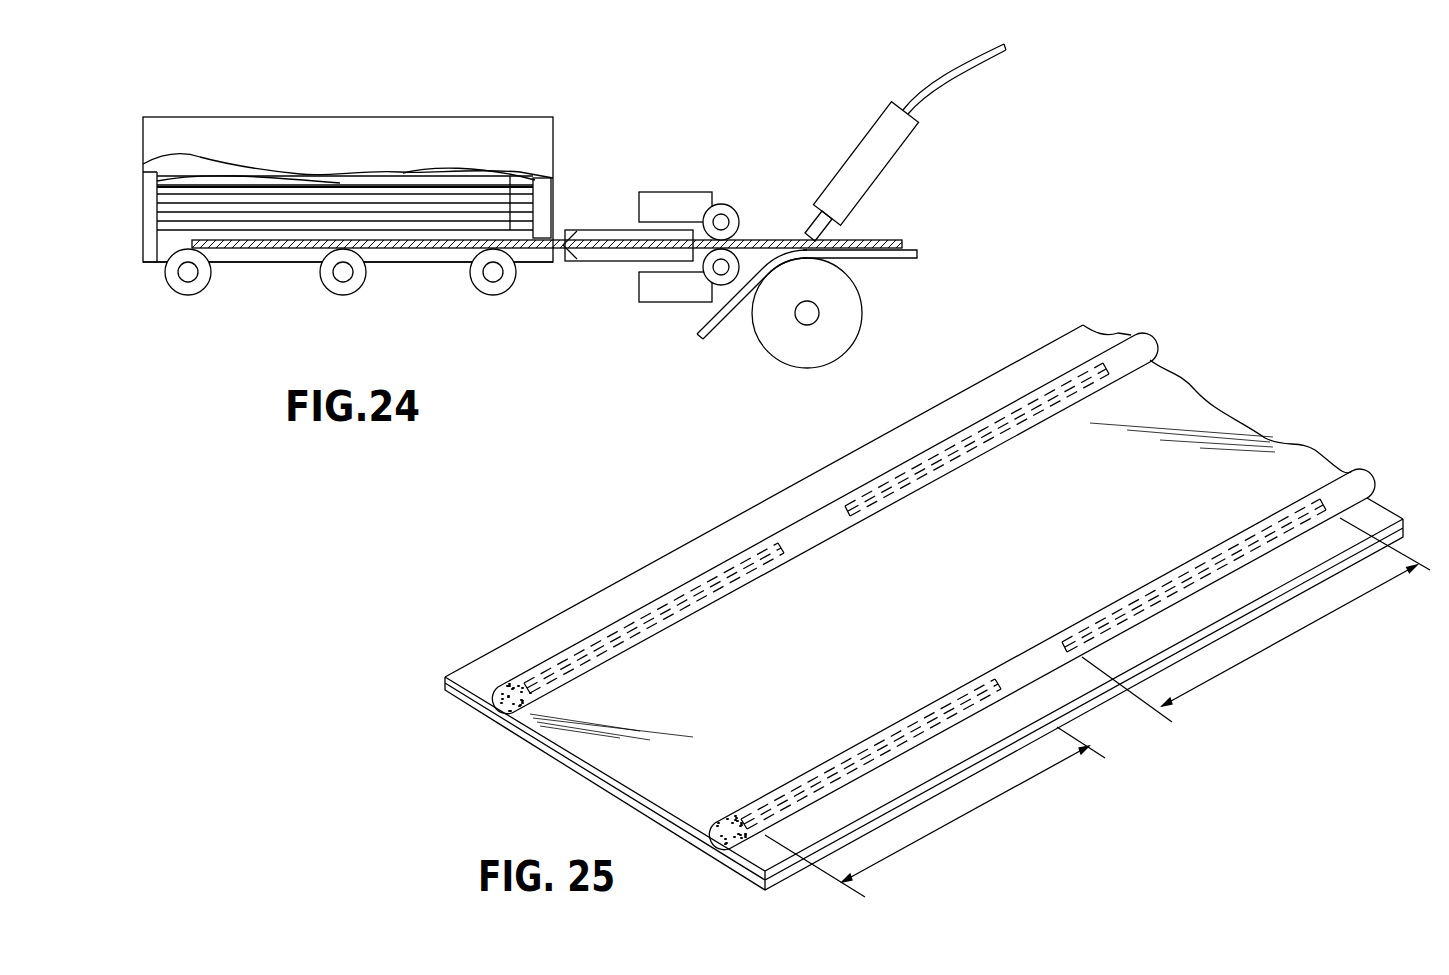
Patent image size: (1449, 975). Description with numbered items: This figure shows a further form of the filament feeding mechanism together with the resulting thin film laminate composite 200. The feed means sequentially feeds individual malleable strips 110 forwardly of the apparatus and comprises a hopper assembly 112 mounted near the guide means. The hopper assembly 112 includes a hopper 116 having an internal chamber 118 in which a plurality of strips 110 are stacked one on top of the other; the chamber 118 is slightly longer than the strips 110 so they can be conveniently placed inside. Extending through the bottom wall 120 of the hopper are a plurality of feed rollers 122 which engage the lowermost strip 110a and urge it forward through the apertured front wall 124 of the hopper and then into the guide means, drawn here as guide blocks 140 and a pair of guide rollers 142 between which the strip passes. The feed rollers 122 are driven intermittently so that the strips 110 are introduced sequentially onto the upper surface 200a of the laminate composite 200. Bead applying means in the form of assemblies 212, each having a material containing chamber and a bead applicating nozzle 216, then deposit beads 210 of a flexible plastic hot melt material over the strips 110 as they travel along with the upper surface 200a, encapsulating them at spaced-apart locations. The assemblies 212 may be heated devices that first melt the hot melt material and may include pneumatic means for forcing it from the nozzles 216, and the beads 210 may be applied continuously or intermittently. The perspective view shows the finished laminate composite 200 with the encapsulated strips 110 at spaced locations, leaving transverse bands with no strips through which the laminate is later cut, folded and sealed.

In FIG. 24, the malleable strip 110 is at (357, 207).
In FIG. 25, the malleable strip 110 is at (652, 602).
In FIG. 24, the lowermost strip 110a is at (424, 262).
In FIG. 24, the hopper assembly 112 is at (207, 111).
In FIG. 24, the hopper 116 is at (130, 191).
In FIG. 24, the internal chamber 118 is at (530, 203).
In FIG. 24, the bottom wall 120 is at (248, 256).
In FIG. 24, the feed rollers 122 is at (188, 296).
In FIG. 24, the apertured front wall 124 is at (548, 202).
In FIG. 24, the guide blocks 140 is at (673, 205).
In FIG. 24, the feed rollers 142 is at (725, 206).
In FIG. 24, the web / sheet 200 is at (707, 342).
In FIG. 25, the web / sheet 200 is at (1055, 690).
In FIG. 25, the upper surface of the laminate composite 200a is at (1190, 420).
In FIG. 25, the beads 210 is at (512, 680).
In FIG. 24, the bead applying assemblies 212 is at (857, 137).
In FIG. 24, the bead applicating nozzle 216 is at (820, 224).